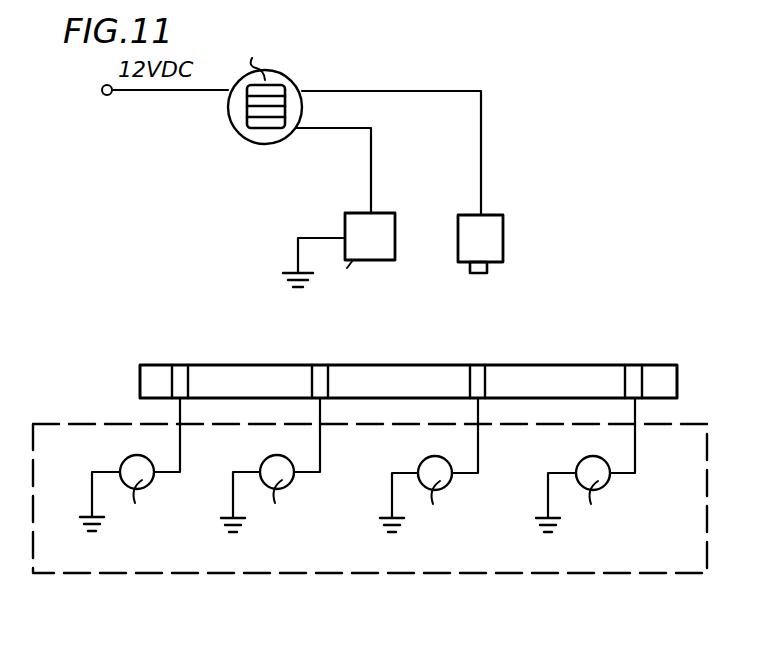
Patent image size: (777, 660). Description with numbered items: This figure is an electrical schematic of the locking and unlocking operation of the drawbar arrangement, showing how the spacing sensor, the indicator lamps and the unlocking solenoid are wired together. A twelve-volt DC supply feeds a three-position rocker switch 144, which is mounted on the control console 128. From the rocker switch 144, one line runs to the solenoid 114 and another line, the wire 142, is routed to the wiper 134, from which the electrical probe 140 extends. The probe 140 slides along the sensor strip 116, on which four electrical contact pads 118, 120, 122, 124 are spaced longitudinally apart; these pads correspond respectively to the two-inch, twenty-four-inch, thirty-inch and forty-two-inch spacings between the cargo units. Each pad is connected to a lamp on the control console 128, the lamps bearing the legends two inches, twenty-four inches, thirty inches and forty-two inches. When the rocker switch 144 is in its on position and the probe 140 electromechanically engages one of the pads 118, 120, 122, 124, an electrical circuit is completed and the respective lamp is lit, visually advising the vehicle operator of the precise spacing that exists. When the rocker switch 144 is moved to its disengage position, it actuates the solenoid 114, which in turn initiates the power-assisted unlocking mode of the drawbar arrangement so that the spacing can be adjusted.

The solenoid 114 is at (380, 223).
The sensor strip 116 is at (431, 362).
The pad 118 is at (633, 373).
The pad 120 is at (478, 373).
The pad 122 is at (322, 373).
The pad 124 is at (191, 355).
The control console 128 is at (688, 568).
The wiper 134 is at (528, 265).
The electrical probe 140 is at (483, 273).
The wire 142 is at (481, 135).
The rocker switch 144 is at (258, 128).